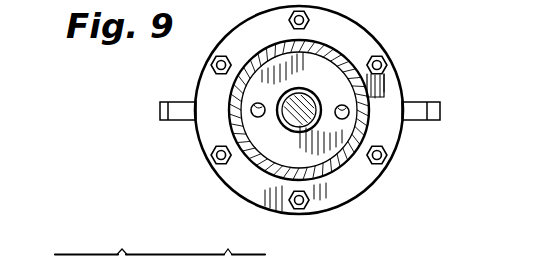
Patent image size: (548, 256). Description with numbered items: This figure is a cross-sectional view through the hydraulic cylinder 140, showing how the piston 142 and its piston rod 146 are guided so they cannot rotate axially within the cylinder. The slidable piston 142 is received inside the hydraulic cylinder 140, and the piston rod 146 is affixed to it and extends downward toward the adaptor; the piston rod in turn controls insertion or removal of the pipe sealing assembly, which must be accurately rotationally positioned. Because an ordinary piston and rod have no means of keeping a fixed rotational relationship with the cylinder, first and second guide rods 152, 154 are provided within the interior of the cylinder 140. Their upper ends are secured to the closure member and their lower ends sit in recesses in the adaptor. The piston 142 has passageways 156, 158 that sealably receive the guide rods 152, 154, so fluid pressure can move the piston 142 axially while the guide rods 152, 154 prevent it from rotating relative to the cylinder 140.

The hydraulic cylinder 140 is at (263, 176).
The piston 142 is at (333, 178).
The piston rod 146 is at (310, 88).
The first guide rod 152 is at (250, 117).
The second guide rod 154 is at (350, 119).
The passageway 156 is at (254, 104).
The passageway 158 is at (350, 108).